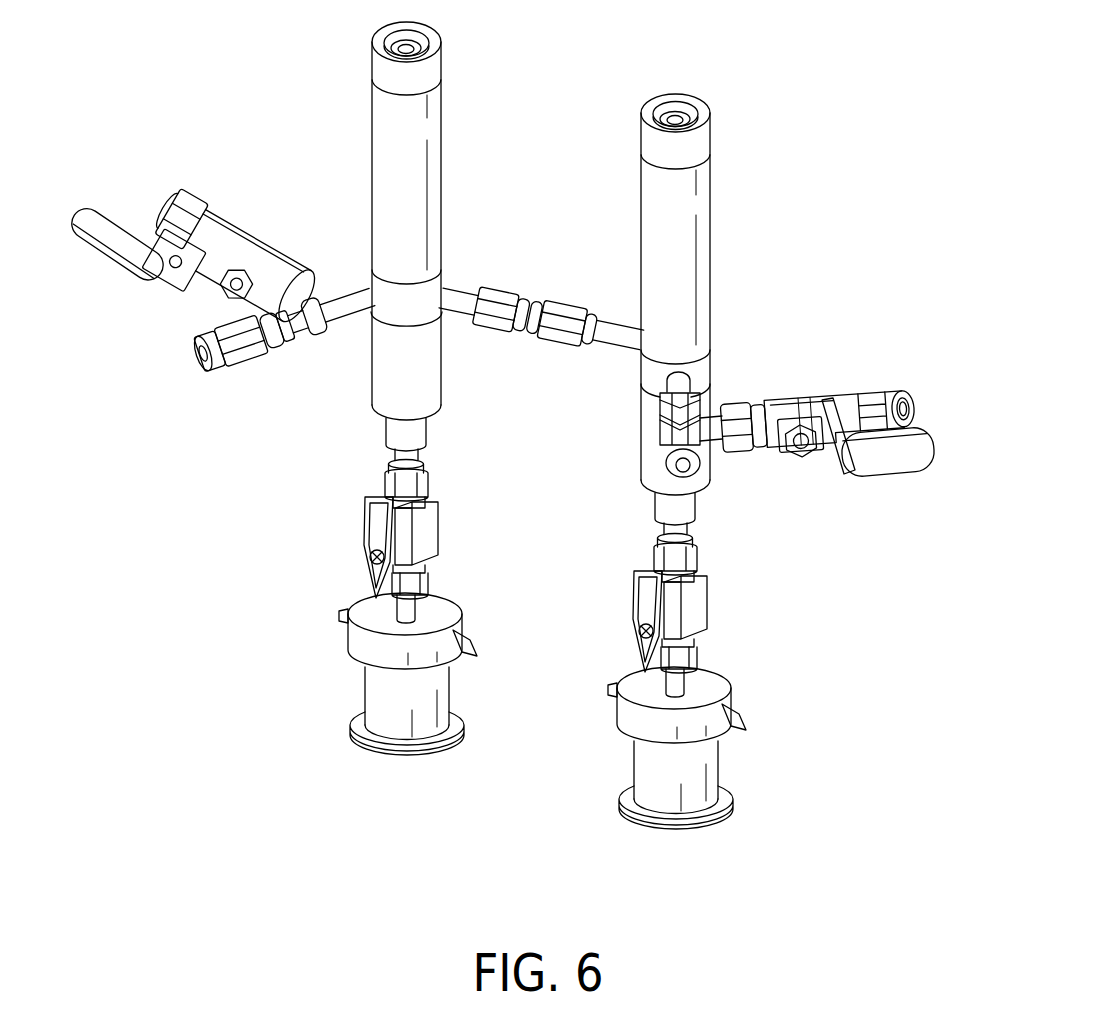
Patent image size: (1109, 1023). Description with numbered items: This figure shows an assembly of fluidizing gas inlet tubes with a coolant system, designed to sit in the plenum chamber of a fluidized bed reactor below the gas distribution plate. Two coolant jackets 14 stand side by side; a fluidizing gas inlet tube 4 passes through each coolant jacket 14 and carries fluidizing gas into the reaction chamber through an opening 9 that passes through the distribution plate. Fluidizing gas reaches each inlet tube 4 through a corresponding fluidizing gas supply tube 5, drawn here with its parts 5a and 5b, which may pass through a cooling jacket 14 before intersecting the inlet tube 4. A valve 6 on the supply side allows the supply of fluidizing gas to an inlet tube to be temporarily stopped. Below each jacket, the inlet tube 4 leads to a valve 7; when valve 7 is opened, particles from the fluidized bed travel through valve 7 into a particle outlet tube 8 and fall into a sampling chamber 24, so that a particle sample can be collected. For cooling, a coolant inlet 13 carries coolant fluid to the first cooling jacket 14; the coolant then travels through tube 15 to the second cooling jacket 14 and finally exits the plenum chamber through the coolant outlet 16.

The fluidizing gas inlet tube 4 is at (670, 527).
The fluidizing gas supply tube 5 is at (843, 352).
The valve body 5a is at (883, 393).
The valve connection nut 5b is at (716, 402).
The valve 6 is at (808, 454).
The valve 7 is at (655, 557).
The particle outlet tube 8 is at (670, 682).
The opening 9 is at (650, 107).
The coolant inlet 13 is at (341, 338).
The coolant jacket 14 is at (432, 180).
The tube 15 is at (609, 350).
The coolant outlet 16 is at (716, 420).
The sampling chamber 24 is at (430, 697).